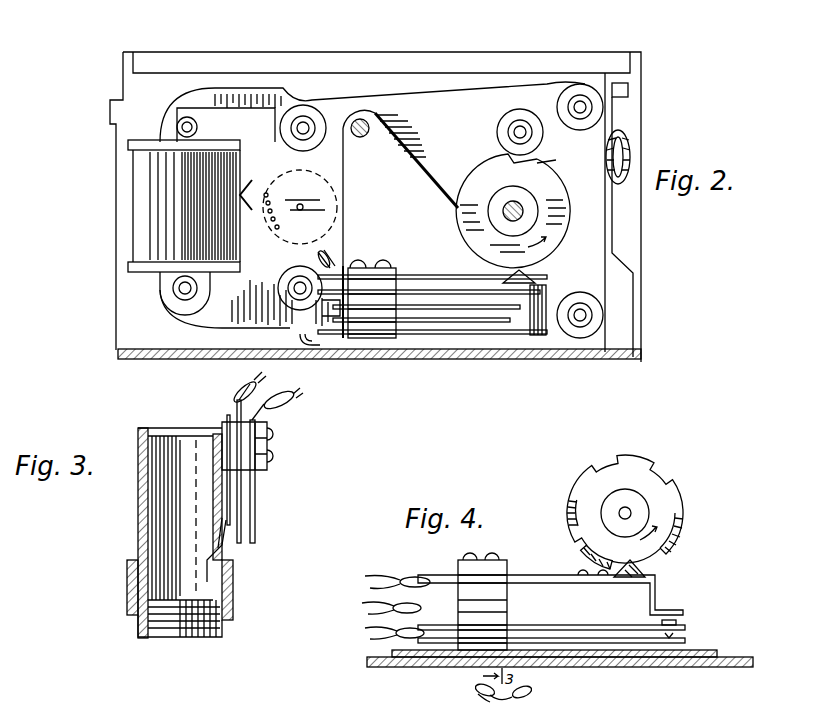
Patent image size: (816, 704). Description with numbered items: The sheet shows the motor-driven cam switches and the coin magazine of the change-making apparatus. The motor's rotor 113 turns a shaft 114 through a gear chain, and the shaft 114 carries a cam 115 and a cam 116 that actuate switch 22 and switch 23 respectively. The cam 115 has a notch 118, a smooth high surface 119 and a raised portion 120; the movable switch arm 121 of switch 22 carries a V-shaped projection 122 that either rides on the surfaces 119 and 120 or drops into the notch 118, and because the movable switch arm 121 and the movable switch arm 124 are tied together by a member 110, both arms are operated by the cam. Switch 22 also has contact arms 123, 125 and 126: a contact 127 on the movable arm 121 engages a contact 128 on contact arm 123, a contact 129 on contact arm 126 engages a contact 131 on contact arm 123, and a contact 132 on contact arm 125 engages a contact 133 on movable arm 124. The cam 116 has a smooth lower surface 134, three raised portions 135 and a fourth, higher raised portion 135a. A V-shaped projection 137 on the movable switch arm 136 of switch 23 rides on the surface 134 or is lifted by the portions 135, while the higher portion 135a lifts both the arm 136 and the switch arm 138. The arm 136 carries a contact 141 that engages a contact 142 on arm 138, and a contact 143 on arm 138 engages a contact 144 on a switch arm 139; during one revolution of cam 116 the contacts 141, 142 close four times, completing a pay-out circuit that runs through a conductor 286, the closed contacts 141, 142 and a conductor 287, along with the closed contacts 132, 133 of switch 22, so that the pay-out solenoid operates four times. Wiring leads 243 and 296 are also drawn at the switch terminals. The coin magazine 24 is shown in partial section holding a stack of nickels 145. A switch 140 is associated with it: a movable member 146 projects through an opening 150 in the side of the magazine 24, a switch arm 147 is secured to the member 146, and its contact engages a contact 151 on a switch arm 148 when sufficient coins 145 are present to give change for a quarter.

In FIG. 2, the member 110 is at (520, 342).
In FIG. 2, the rotor 113 is at (300, 186).
In FIG. 2, the cam 115 is at (478, 165).
In FIG. 4, the cam 115 is at (577, 478).
In FIG. 4, the cam 116 is at (633, 473).
In FIG. 2, the notch 118 is at (540, 160).
In FIG. 2, the smooth high surface 119 is at (568, 178).
In FIG. 2, the raised portion 120 is at (505, 152).
In FIG. 2, the movable switch arm 121 is at (375, 264).
In FIG. 2, the switch 22 is at (372, 268).
In FIG. 2, the contact arm 126 is at (420, 300).
In FIG. 2, the contact 129 is at (442, 292).
In FIG. 2, the V-shaped projection 122 is at (545, 276).
In FIG. 2, the contact 127 is at (548, 290).
In FIG. 2, the contact 128 is at (548, 300).
In FIG. 2, the contact arm 123 is at (410, 332).
In FIG. 2, the contact arm 125 is at (383, 345).
In FIG. 2, the contact 131 is at (452, 310).
In FIG. 2, the contact 132 is at (460, 340).
In FIG. 2, the contact 133 is at (496, 313).
In FIG. 2, the movable switch arm 124 is at (505, 345).
In FIG. 3, the coin magazine 24 is at (158, 492).
In FIG. 3, the switch 140 is at (270, 444).
In FIG. 3, the nickels 145 is at (182, 635).
In FIG. 3, the switch arm 147 is at (243, 496).
In FIG. 3, the switch arm 148 is at (258, 510).
In FIG. 3, the opening 150 is at (216, 530).
In FIG. 3, the movable member 146 is at (205, 568).
In FIG. 3, the contact 151 is at (245, 530).
In FIG. 3, the lead wires 243 is at (236, 394).
In FIG. 4, the raised portions 135 is at (600, 468).
In FIG. 4, the shaft 114 is at (613, 497).
In FIG. 4, the raised portion 135a is at (573, 527).
In FIG. 4, the smooth lower surface 134 is at (680, 500).
In FIG. 4, the V-shaped projection 137 is at (643, 573).
In FIG. 4, the movable switch arm 136 is at (537, 575).
In FIG. 4, the switch arm 138 is at (538, 627).
In FIG. 4, the contact 141 is at (670, 607).
In FIG. 4, the contact 142 is at (672, 622).
In FIG. 4, the contact 143 is at (680, 634).
In FIG. 4, the switch 23 is at (513, 560).
In FIG. 4, the conductor 286 is at (398, 576).
In FIG. 4, the conductor 287 is at (392, 602).
In FIG. 4, the lead wire 296 is at (395, 627).
In FIG. 4, the switch arm 139 is at (600, 653).
In FIG. 4, the contact 144 is at (670, 648).